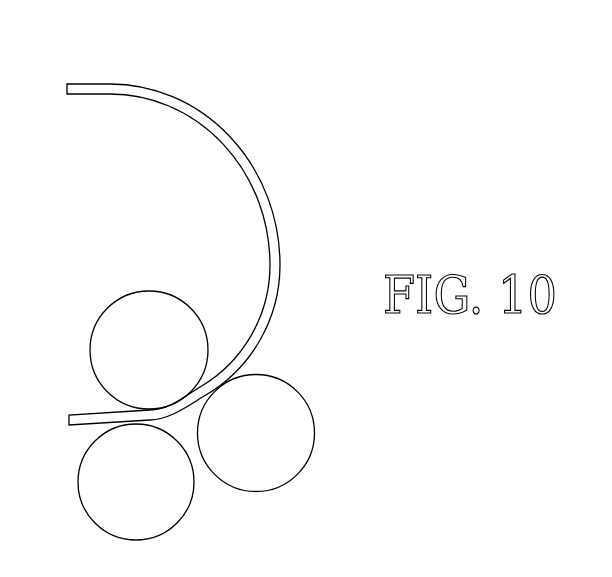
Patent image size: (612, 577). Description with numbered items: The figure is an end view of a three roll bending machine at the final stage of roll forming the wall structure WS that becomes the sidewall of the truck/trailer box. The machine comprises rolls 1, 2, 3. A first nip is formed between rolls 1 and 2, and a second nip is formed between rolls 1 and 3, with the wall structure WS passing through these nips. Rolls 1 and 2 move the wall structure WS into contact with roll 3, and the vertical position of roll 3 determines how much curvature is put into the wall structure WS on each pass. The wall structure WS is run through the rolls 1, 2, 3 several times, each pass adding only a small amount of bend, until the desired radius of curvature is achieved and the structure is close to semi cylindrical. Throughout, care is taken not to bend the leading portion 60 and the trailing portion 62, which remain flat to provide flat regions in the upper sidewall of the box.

The wall structure WS is at (265, 188).
The leading portion of the wall structure 60 is at (88, 84).
The trailing portion of the wall structure 62 is at (81, 415).
The roll 1 is at (147, 356).
The roll 2 is at (136, 482).
The roll 3 is at (256, 433).